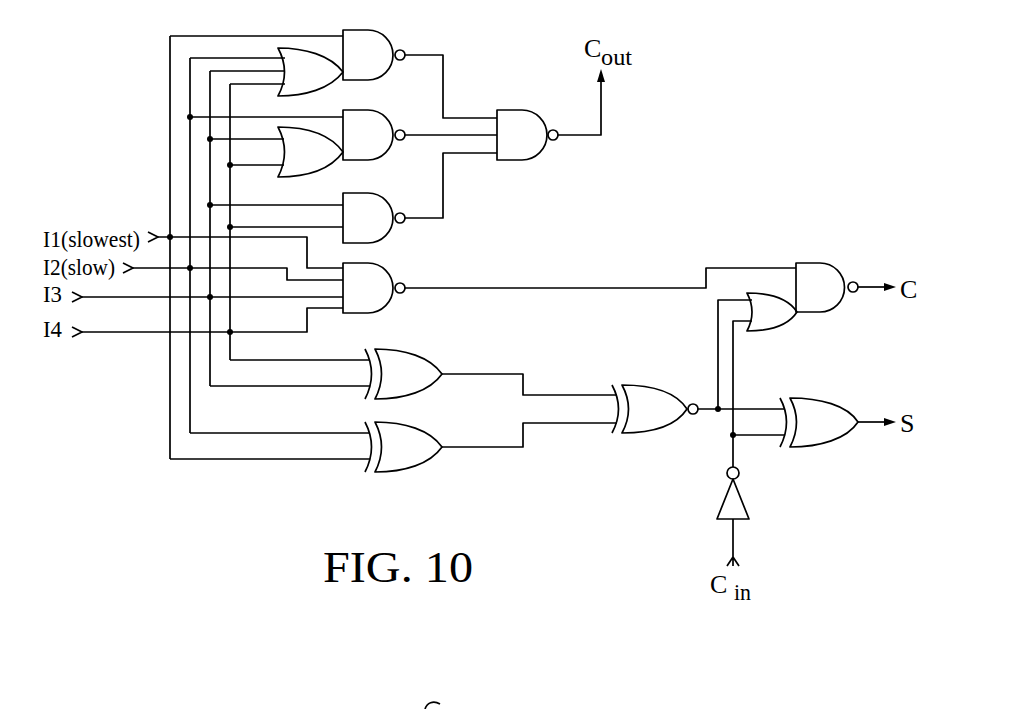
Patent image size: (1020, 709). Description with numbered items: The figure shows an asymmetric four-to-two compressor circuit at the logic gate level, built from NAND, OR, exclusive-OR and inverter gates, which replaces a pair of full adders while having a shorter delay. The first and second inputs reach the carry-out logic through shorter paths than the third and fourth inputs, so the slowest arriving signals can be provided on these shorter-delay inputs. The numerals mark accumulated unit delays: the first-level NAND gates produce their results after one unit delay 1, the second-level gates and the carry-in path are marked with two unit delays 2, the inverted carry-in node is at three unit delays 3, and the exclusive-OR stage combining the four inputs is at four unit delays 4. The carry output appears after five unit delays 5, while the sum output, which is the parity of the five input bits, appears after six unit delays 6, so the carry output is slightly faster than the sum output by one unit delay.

The unit delay 1 is at (351, 170).
The unit delay 2 is at (552, 337).
The unit delay 3 is at (731, 477).
The unit delay 4 is at (660, 405).
The unit delay 5 is at (821, 296).
The unit delay 6 is at (838, 421).